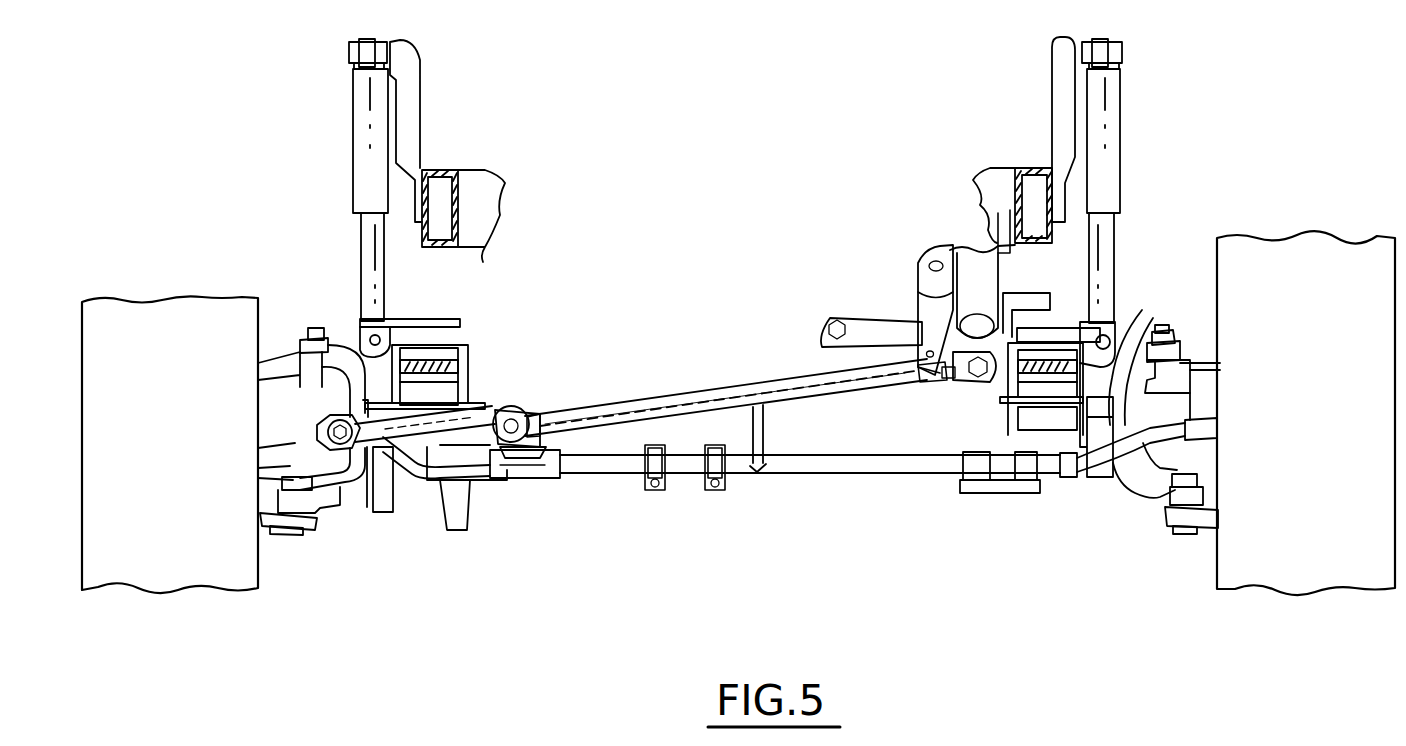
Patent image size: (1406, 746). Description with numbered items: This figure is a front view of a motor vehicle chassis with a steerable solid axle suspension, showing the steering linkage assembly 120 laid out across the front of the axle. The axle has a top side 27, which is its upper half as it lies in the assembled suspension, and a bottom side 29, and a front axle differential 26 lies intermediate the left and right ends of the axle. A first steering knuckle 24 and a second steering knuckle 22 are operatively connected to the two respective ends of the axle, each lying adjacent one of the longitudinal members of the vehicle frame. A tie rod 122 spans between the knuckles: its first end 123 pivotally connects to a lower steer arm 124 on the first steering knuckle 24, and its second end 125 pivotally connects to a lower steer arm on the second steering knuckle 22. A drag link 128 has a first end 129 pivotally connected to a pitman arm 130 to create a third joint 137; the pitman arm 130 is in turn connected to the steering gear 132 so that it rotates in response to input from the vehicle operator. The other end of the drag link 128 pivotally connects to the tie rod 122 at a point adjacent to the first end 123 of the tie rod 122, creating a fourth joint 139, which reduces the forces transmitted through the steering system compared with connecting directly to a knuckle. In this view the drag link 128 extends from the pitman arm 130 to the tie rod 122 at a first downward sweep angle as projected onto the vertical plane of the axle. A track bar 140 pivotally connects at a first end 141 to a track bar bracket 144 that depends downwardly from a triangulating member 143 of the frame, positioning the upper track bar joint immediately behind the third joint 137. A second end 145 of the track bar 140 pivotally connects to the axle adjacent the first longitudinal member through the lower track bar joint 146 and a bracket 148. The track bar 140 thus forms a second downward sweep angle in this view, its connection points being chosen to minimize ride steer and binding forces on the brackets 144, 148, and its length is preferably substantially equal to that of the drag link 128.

The second steering knuckle 22 is at (1200, 363).
The first steering knuckle 24 is at (273, 363).
The front axle differential 26 is at (1007, 493).
The top side 27 is at (1120, 347).
The bottom side 29 is at (1047, 478).
The steering linkage assembly 120 is at (550, 543).
The tie rod 122 is at (743, 467).
The first end 123 is at (363, 447).
The lower steer arm 124 is at (310, 433).
The second end 125 is at (1163, 438).
The drag link 128 is at (478, 417).
The first end 129 is at (897, 367).
The pitman arm 130 is at (925, 335).
The steering gear 132 is at (923, 298).
The third joint 137 is at (927, 380).
The fourth joint 139 is at (327, 427).
The track bar 140 is at (783, 393).
The first end 141 is at (953, 377).
The triangulating member 143 is at (855, 320).
The track bar bracket 144 is at (1000, 383).
The second end 145 is at (635, 413).
The lower track bar joint 146 is at (540, 420).
The bracket 148 is at (521, 432).